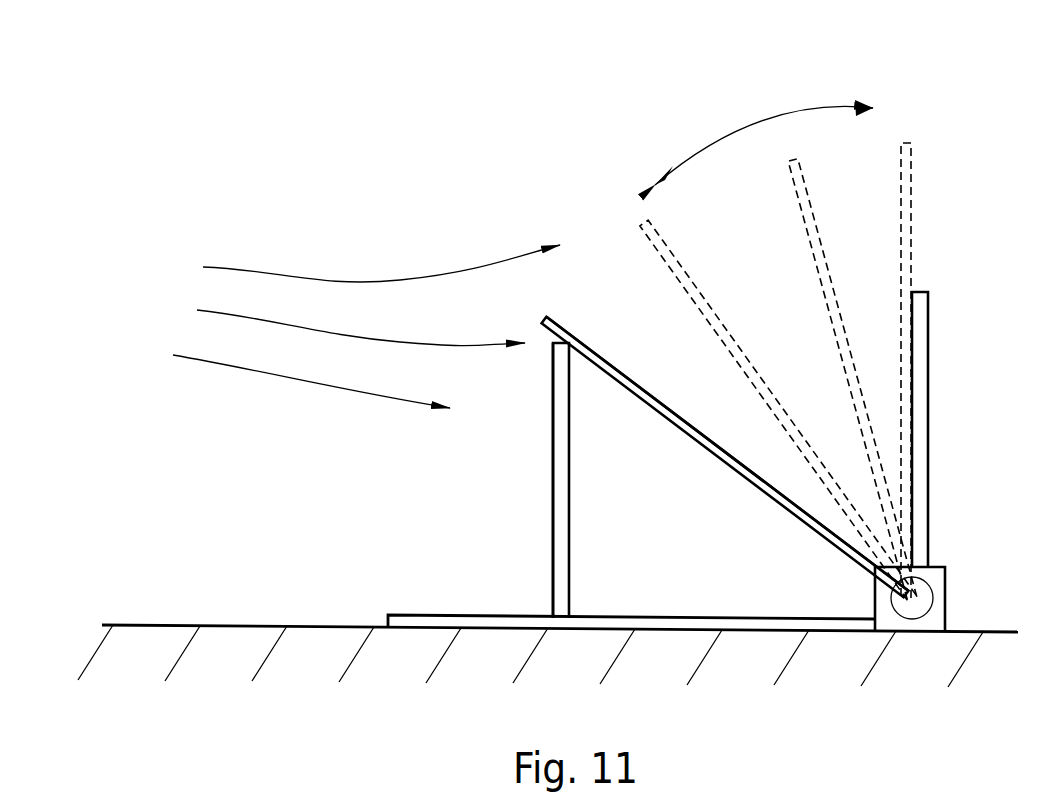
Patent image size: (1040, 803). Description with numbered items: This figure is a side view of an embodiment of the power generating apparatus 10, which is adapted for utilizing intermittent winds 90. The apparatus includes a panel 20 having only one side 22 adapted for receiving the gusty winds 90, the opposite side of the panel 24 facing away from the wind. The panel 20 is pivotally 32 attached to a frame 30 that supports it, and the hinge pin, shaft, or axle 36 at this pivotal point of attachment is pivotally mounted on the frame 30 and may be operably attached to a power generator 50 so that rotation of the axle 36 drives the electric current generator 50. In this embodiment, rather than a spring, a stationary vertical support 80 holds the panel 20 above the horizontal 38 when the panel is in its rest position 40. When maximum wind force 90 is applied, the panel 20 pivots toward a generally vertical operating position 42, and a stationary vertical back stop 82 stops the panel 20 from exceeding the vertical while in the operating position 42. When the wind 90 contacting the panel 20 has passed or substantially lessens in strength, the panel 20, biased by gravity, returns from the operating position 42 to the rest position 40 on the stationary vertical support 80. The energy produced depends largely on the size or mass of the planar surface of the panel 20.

The power generating apparatus 10 is at (380, 120).
The panel 20 is at (705, 447).
The side of panel adapted for receiving winds 22 is at (668, 423).
The side of the panel opposite the wind-receiving side 24 is at (640, 385).
The frame 30 is at (770, 628).
The pivotal attachment 32 is at (920, 607).
The hinge pin, shaft, or axle 36 is at (947, 573).
The horizontal 38 is at (1005, 635).
The rest position 40 is at (575, 307).
The vertical or operating position 42 is at (917, 212).
The power generator 50 is at (935, 620).
The stationary vertical support 80 is at (553, 497).
The stationary vertical back stop 82 is at (920, 363).
The wind 90 is at (205, 305).